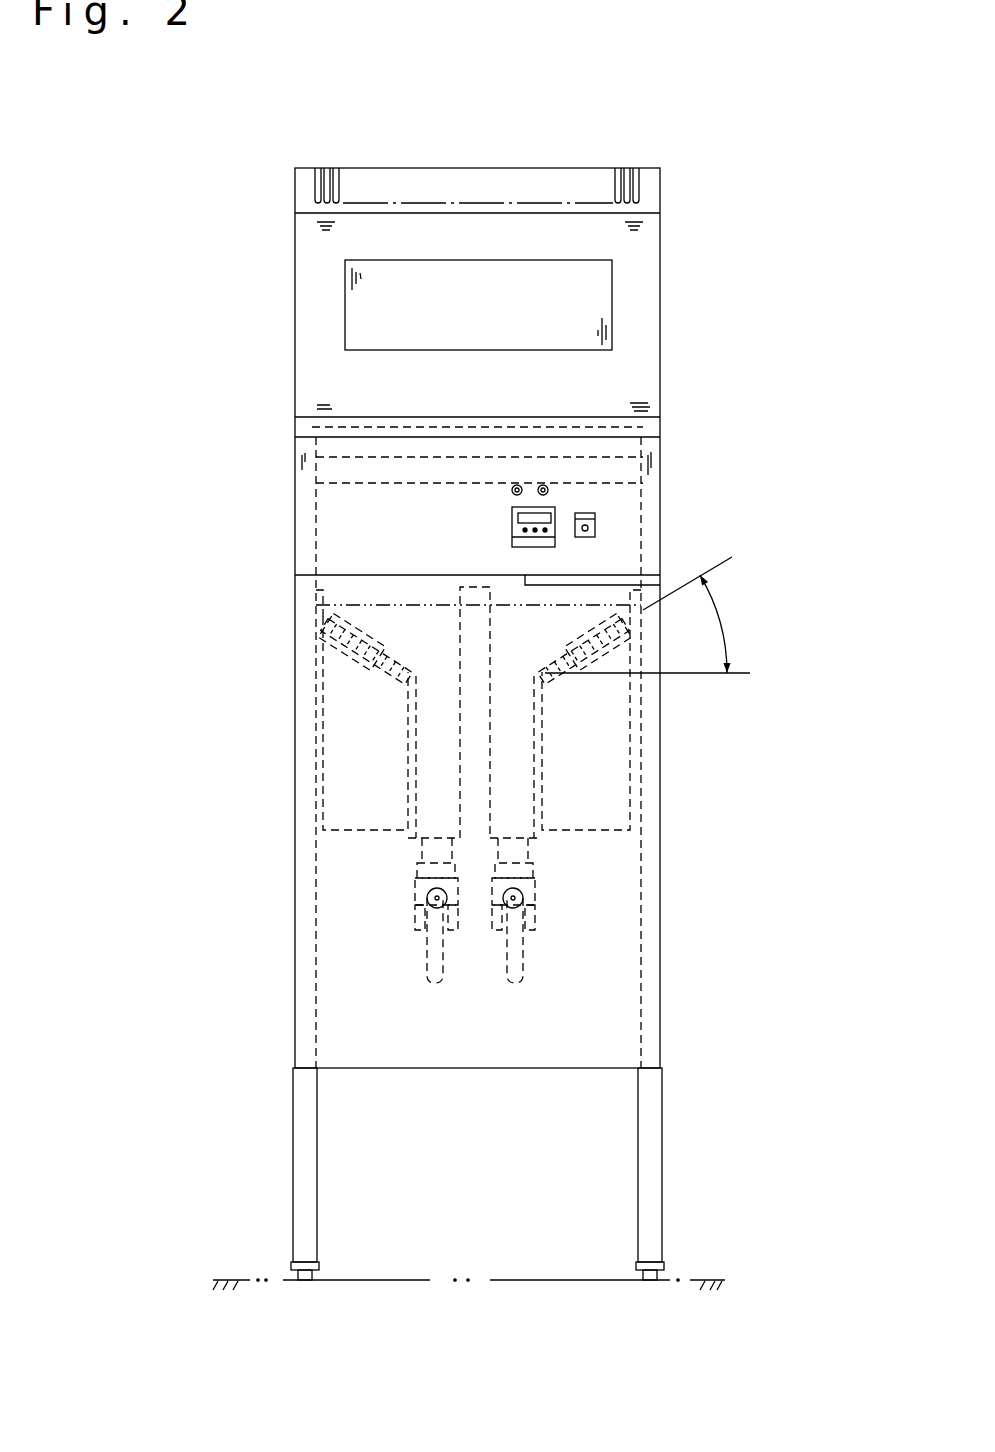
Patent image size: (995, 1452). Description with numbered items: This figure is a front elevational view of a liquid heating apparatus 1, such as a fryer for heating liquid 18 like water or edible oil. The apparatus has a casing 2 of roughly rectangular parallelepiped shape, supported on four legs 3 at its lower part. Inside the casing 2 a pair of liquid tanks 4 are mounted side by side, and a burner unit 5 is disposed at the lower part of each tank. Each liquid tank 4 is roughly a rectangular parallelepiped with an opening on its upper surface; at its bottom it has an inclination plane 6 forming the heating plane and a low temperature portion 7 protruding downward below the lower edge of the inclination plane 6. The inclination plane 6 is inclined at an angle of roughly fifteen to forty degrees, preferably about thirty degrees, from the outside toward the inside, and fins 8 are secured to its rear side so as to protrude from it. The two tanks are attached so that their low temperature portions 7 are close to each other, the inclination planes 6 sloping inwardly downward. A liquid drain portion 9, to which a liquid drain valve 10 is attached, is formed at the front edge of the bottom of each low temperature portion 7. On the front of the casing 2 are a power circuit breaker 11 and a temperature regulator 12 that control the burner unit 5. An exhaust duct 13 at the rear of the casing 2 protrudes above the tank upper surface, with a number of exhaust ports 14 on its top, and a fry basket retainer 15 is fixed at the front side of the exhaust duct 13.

The liquid heating apparatus 1 is at (696, 193).
The casing 2 is at (288, 428).
The legs 3 is at (292, 1150).
The liquid tanks 4 is at (318, 607).
The burner unit 5 is at (333, 783).
The inclination plane 6 is at (345, 652).
The low temperature portion 7 is at (417, 810).
The fins 8 is at (400, 683).
The liquid drain portion 9 is at (408, 848).
The liquid drain valve 10 is at (413, 903).
The power circuit breaker 11 is at (590, 513).
The temperature regulator 12 is at (512, 527).
The exhaust duct 13 is at (662, 303).
The exhaust ports 14 is at (336, 170).
The fry basket retainer 15 is at (353, 300).
The liquid 18 is at (385, 605).